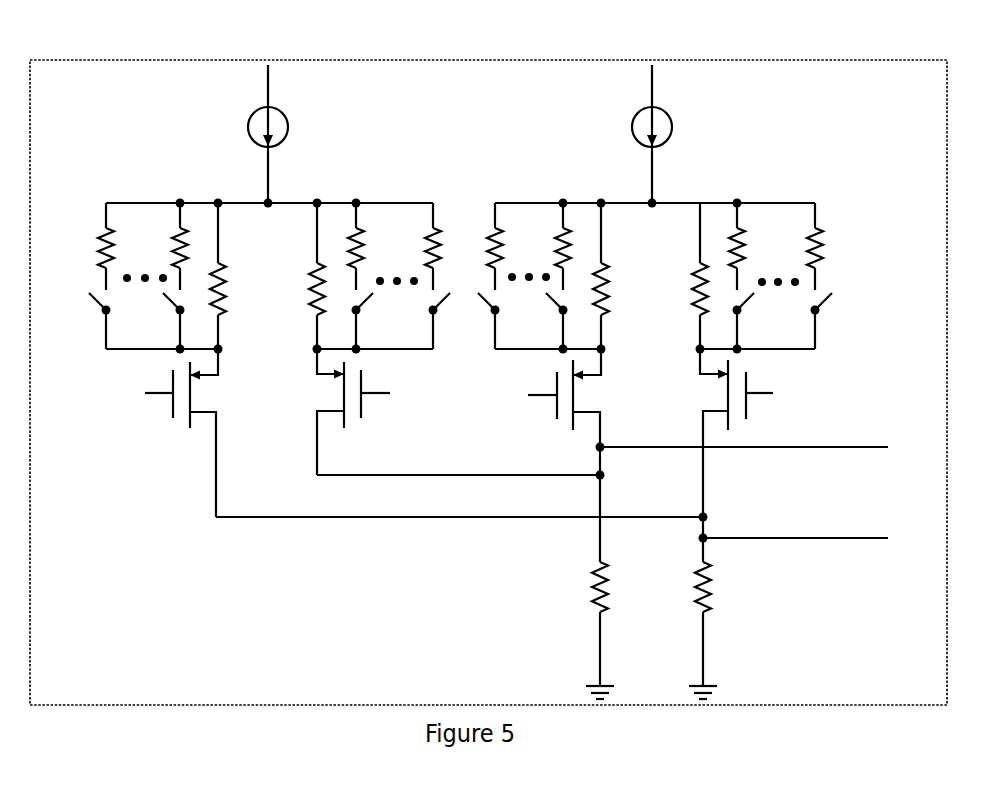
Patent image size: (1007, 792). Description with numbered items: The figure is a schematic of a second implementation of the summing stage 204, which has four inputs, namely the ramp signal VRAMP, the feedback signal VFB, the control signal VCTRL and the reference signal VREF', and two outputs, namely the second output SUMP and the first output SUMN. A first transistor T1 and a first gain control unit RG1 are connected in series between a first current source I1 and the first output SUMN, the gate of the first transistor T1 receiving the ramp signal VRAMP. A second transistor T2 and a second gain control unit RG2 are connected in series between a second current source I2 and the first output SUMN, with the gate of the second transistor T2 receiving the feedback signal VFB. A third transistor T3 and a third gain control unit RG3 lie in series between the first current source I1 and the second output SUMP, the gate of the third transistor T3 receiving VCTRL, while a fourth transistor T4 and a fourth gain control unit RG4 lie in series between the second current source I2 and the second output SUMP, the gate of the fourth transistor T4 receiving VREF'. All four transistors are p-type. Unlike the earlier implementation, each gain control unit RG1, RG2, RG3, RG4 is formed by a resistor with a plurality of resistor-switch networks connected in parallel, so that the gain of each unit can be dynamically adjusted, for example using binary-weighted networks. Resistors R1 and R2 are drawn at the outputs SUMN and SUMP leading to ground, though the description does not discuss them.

The summing stage 204 is at (937, 696).
The first current source I1 is at (279, 134).
The second current source I2 is at (663, 134).
The first gain control unit RG1 is at (227, 276).
The second gain control unit RG2 is at (688, 276).
The third gain control unit RG3 is at (307, 276).
The fourth gain control unit RG4 is at (615, 276).
The first transistor T1 is at (205, 433).
The second transistor T2 is at (714, 455).
The third transistor T3 is at (330, 412).
The fourth transistor T4 is at (588, 455).
The resistor R1 is at (712, 630).
The resistor R2 is at (589, 630).
The ramp signal VRAMP is at (136, 384).
The control signal VCTRL is at (394, 380).
The reference signal VREF' is at (526, 383).
The feedback signal VFB is at (767, 382).
The second output SUMP is at (744, 437).
The first output SUMN is at (795, 549).